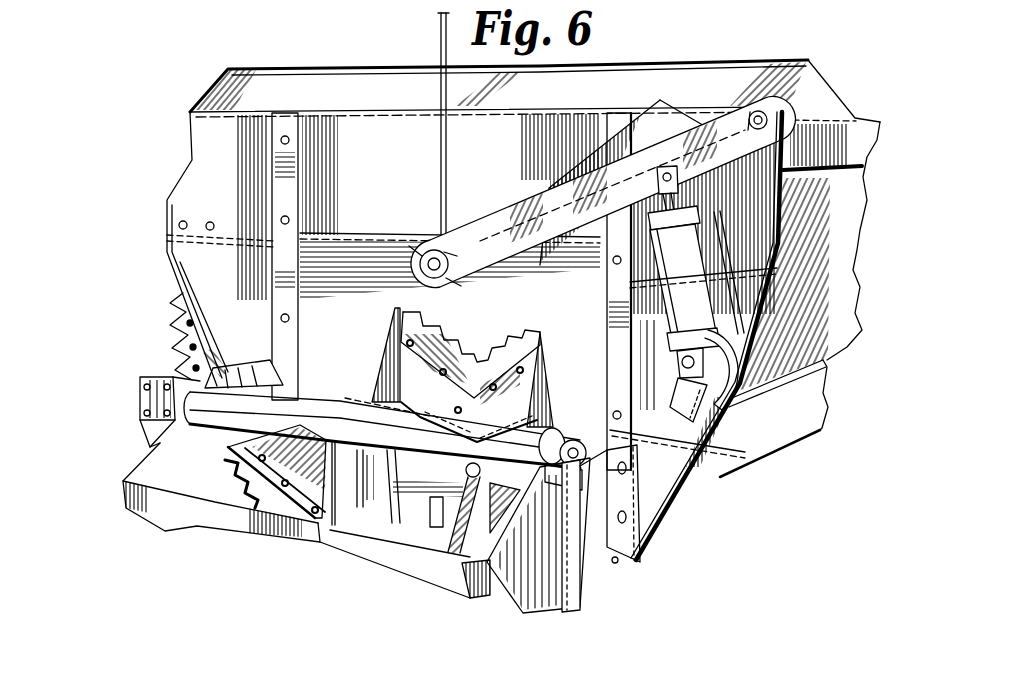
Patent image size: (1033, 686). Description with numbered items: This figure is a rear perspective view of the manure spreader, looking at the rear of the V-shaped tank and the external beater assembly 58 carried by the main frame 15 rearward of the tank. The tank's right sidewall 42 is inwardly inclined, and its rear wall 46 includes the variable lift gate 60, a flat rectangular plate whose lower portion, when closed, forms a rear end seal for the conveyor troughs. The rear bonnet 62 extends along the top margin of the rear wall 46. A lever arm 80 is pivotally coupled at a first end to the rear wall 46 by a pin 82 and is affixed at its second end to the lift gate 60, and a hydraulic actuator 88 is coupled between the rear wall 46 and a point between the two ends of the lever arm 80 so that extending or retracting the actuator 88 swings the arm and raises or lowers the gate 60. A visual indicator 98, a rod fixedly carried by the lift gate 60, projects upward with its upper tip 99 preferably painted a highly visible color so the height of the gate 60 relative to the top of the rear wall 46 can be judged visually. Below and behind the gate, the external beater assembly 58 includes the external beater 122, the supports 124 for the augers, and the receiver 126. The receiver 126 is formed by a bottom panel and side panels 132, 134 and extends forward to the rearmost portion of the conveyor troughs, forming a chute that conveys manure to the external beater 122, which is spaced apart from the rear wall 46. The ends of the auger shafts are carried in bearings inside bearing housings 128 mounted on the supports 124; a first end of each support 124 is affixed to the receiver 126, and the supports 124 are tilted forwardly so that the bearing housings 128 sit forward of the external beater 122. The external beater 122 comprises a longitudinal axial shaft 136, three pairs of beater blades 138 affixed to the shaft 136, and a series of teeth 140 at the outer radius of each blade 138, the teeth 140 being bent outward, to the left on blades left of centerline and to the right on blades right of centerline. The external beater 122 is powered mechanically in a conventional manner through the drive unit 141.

The main frame 15 is at (805, 408).
The right sidewall 42 is at (832, 336).
The rear wall 46 is at (200, 182).
The external beater assembly 58 is at (603, 503).
The variable lift gate 60 is at (323, 238).
The rear bonnet 62 is at (662, 62).
The lever arm 80 is at (723, 112).
The pin 82 is at (803, 100).
The hydraulic actuator 88 is at (678, 306).
The visual indicator 98 is at (440, 47).
The upper tip 99 is at (440, 24).
The external beater 122 is at (420, 452).
The supports 124 is at (452, 535).
The receiver 126 is at (333, 528).
The bearing housings 128 is at (468, 576).
The side panel 132 is at (633, 562).
The side panel 134 is at (177, 462).
The axial shaft 136 is at (242, 398).
The beater blades 138 is at (633, 455).
The teeth 140 is at (484, 332).
The drive unit 141 is at (145, 397).